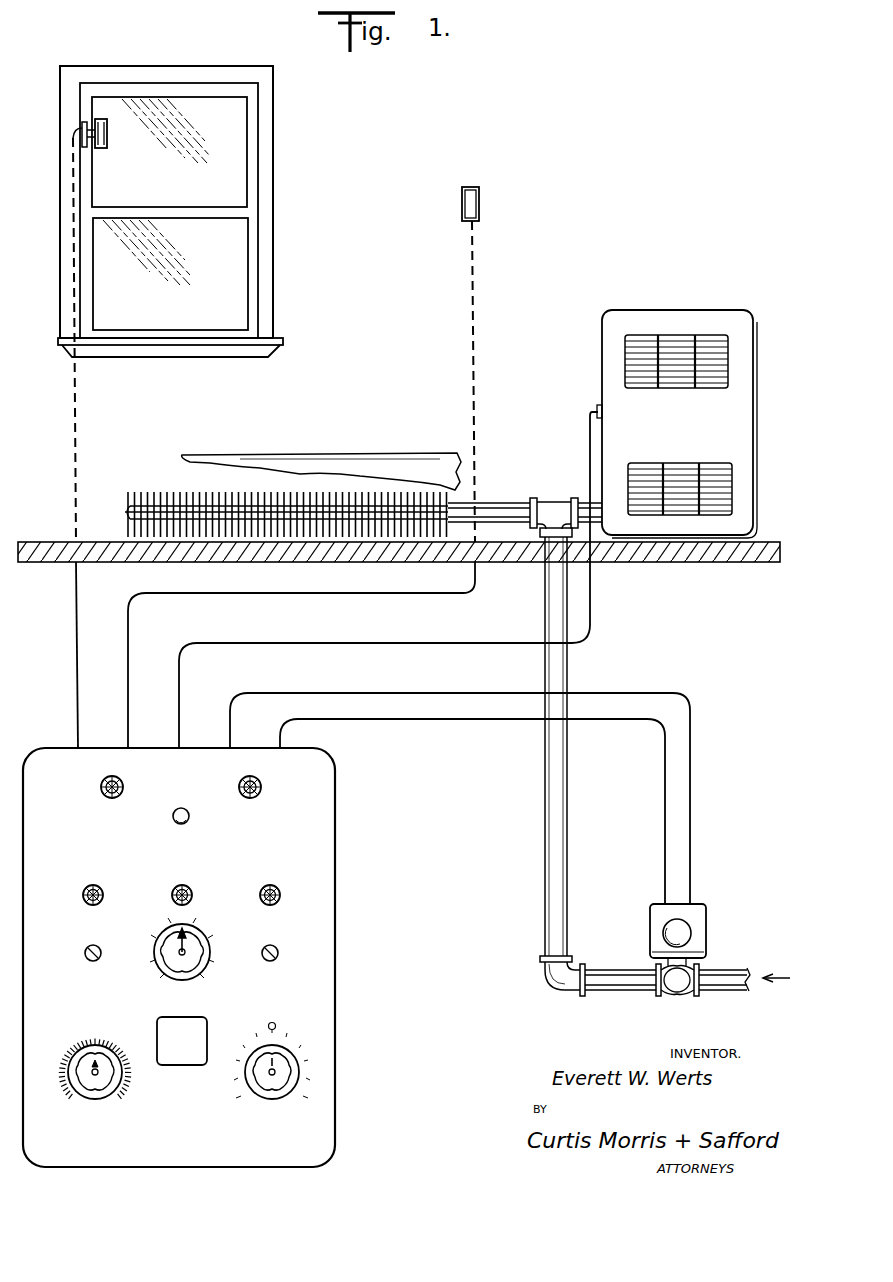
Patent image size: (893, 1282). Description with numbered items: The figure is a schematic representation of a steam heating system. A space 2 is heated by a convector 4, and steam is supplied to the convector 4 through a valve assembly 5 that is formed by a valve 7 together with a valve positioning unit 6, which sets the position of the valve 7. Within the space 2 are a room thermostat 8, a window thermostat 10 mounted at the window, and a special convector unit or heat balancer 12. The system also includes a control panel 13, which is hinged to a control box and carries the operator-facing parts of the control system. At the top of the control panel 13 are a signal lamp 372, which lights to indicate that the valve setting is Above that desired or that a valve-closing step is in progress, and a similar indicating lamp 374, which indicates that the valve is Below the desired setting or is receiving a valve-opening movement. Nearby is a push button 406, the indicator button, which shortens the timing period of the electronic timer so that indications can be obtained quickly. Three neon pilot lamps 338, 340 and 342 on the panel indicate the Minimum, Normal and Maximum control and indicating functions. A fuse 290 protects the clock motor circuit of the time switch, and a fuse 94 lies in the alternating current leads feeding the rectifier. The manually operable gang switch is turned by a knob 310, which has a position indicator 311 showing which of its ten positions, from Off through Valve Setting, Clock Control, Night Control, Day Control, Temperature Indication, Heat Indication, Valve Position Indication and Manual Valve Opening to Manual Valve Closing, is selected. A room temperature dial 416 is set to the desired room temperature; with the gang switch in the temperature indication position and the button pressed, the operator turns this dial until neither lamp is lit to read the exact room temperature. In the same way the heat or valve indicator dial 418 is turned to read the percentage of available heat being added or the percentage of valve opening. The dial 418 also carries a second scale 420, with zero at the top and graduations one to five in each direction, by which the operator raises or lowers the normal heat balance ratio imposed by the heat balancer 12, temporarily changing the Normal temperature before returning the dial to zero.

The space 2 is at (371, 244).
The convector 4 is at (272, 448).
The valve assembly 5 is at (723, 932).
The valve positioning unit 6 is at (647, 930).
The valve 7 is at (676, 988).
The room thermostat 8 is at (491, 208).
The window thermostat 10 is at (118, 126).
The heat balancer 12 is at (680, 305).
The control panel 13 is at (352, 830).
The signal lamp 372 is at (101, 780).
The indicating lamp 374 is at (259, 779).
The push button 406 is at (181, 808).
The neon pilot lamp 338 is at (83, 895).
The neon pilot lamp 340 is at (192, 895).
The neon pilot lamp 342 is at (281, 895).
The position indicator 311 is at (176, 934).
The knob 310 is at (167, 962).
The fuse 290 is at (85, 955).
The fuse 94 is at (278, 954).
The room temperature dial 416 is at (92, 1084).
The heat or valve indicator dial 418 is at (262, 1080).
The second scale 420 is at (276, 1025).